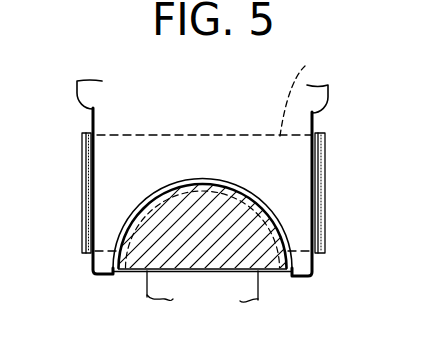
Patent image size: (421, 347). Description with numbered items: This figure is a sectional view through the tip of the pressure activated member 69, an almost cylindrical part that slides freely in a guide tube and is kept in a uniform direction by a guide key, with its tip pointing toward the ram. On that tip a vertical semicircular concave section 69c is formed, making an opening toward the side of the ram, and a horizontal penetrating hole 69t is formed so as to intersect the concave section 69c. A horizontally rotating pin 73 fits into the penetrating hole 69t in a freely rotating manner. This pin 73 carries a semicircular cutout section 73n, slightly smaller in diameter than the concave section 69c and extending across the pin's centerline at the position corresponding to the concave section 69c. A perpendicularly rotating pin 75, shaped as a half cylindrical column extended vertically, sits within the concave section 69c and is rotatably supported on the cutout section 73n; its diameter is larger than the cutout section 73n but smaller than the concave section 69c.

The pressure activated member 69 is at (310, 104).
The horizontal penetrating hole 69t is at (310, 97).
The vertical semicircular concave section 69c is at (270, 212).
The horizontally rotating pin 73 is at (83, 190).
The semicircular cutout section 73n is at (166, 192).
The perpendicularly rotating pin 75 is at (263, 265).